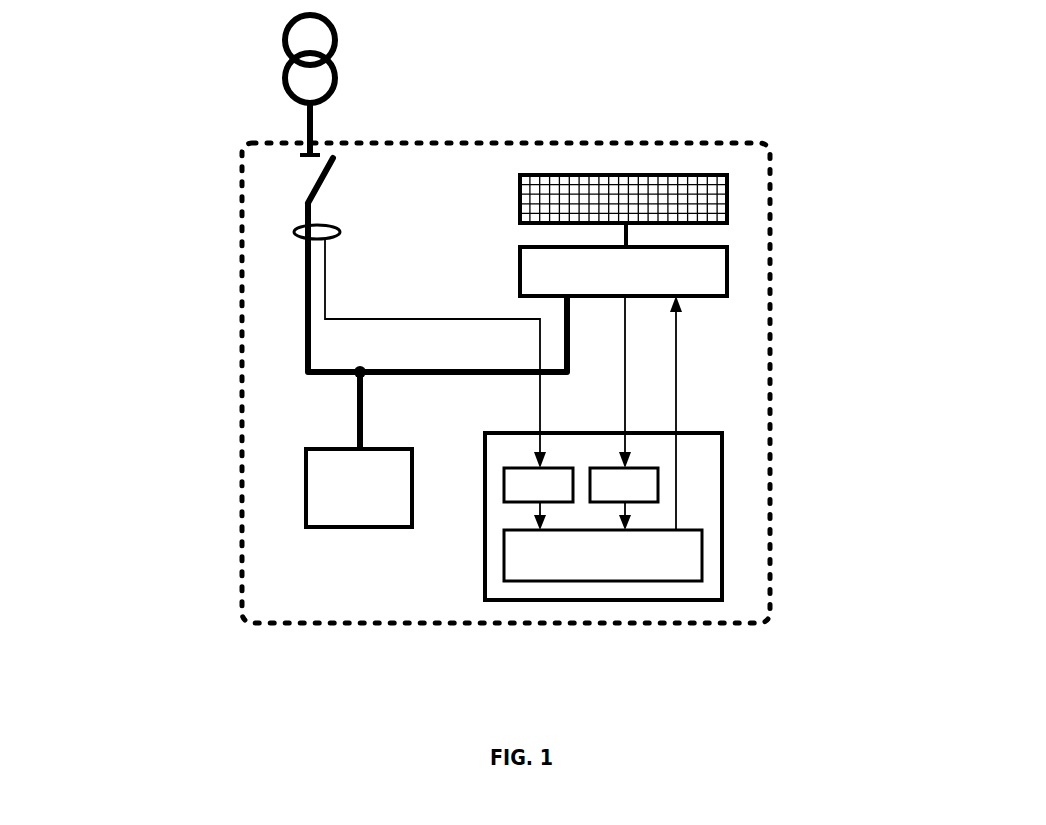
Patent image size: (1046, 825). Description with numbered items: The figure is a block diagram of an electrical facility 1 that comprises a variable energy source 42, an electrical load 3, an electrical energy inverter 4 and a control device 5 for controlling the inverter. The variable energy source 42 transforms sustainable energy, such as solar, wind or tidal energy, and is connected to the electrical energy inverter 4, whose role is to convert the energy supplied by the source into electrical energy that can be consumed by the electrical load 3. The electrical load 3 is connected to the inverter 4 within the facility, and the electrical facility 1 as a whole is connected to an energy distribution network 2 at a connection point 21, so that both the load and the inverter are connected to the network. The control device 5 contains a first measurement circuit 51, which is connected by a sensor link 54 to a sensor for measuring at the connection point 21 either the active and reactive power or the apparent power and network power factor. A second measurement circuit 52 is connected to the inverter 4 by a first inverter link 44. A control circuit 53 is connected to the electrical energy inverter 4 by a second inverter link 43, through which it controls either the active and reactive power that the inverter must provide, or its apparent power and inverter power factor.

The electrical facility 1 is at (438, 177).
The energy distribution network 2 is at (308, 76).
The connection point 21 is at (298, 202).
The electrical load 3 is at (337, 472).
The electrical energy inverter 4 is at (690, 273).
The variable energy source 42 is at (690, 205).
The second inverter link 43 is at (680, 337).
The first inverter link 44 is at (626, 397).
The control device 5 is at (703, 507).
The first measurement circuit 51 is at (525, 486).
The second measurement circuit 52 is at (640, 488).
The control circuit 53 is at (577, 554).
The sensor link 54 is at (540, 392).